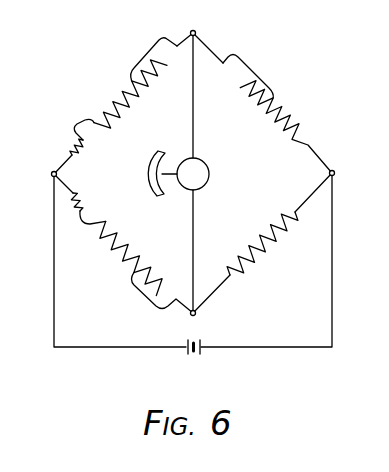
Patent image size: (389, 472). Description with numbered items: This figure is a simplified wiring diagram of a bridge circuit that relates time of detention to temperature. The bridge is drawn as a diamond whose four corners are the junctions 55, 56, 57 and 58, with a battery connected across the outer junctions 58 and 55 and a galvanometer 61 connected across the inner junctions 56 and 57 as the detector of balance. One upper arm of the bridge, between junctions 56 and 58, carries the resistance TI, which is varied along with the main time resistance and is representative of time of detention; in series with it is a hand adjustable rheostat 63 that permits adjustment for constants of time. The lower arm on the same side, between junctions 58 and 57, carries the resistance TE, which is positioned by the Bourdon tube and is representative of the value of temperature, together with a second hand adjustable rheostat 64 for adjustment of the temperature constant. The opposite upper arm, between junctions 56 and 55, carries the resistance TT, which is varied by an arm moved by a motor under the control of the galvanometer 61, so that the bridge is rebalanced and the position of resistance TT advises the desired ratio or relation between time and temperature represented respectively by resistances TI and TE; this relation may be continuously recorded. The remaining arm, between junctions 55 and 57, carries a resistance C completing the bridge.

The bridge junction 55 is at (346, 175).
The bridge junction 56 is at (202, 24).
The bridge junction 57 is at (203, 322).
The bridge junction 58 is at (39, 177).
The galvanometer 61 is at (204, 163).
The hand adjustable rheostat 63 is at (84, 146).
The hand adjustable rheostat 64 is at (83, 199).
The time-of-detention resistance TI is at (143, 80).
The ratio resistance TT is at (262, 103).
The temperature resistance TE is at (144, 267).
The resistor C is at (262, 243).